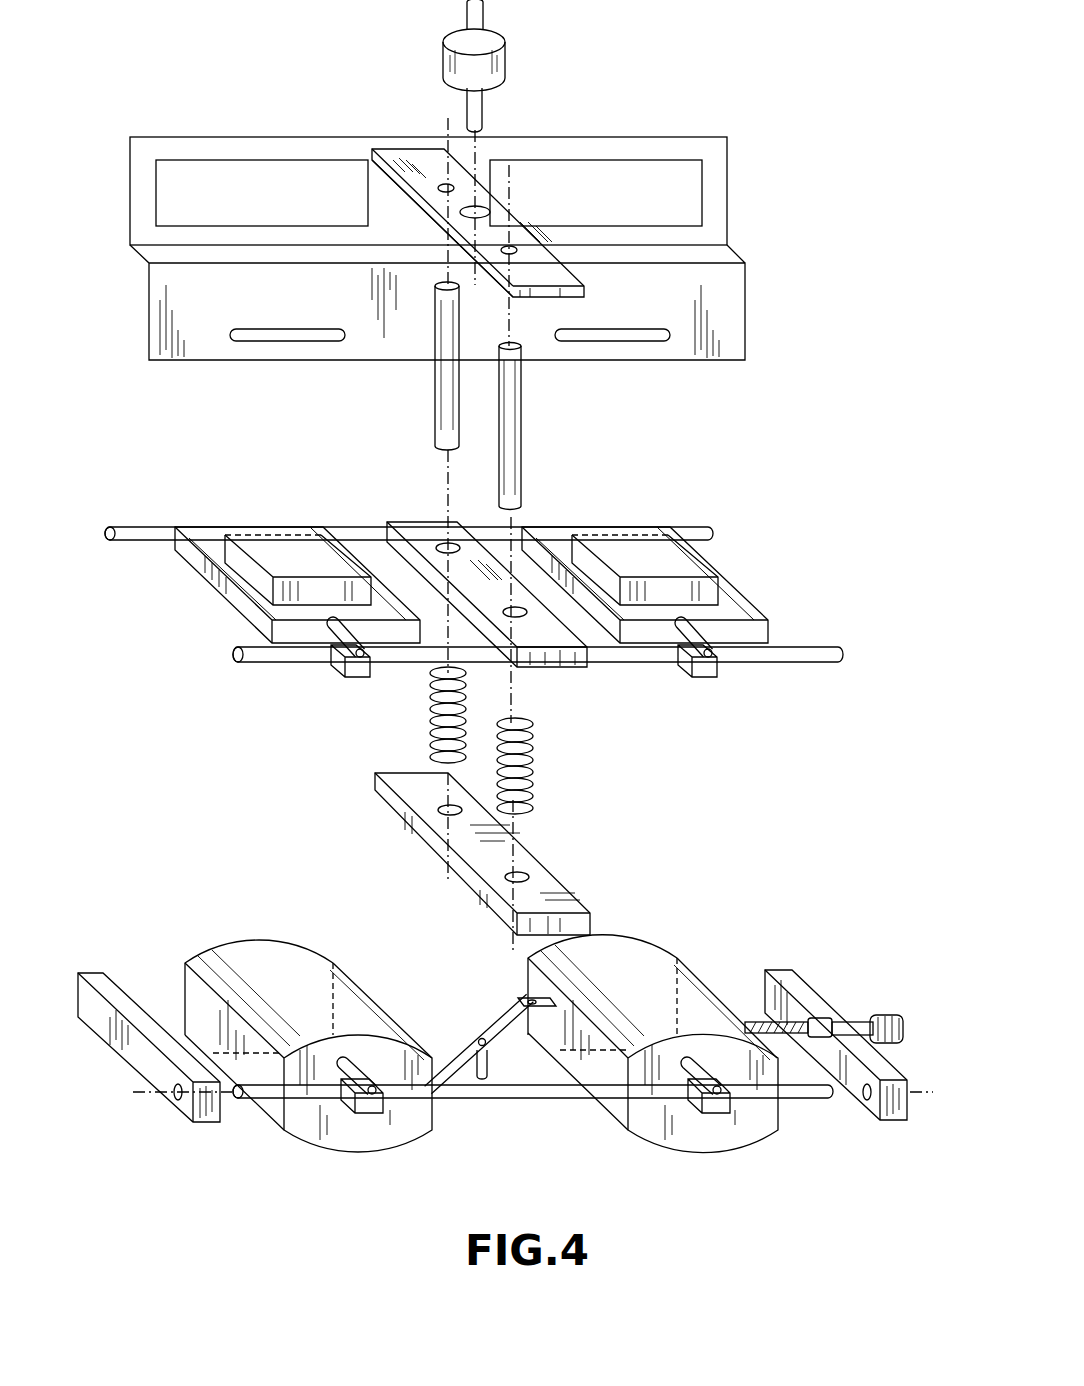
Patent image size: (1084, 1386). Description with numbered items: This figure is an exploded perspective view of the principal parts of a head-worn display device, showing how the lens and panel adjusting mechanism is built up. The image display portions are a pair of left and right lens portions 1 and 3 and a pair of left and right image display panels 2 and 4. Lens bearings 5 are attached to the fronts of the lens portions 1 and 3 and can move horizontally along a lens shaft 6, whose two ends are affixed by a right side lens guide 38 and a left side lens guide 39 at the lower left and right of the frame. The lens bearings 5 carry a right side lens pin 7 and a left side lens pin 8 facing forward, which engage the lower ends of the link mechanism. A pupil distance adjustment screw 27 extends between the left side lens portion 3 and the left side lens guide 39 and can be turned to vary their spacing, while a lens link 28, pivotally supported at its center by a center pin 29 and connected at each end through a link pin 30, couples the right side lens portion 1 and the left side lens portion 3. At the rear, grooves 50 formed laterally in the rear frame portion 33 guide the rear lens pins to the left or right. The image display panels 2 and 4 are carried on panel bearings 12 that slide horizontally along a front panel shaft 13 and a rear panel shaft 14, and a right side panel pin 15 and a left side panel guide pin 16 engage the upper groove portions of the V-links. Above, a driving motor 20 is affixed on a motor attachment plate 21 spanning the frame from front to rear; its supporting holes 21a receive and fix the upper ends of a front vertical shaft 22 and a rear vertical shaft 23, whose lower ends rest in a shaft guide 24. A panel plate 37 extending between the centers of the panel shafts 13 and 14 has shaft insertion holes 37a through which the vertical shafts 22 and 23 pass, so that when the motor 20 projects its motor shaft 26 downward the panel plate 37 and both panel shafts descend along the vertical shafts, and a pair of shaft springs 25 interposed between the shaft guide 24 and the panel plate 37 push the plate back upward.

The right side lens portion 1 is at (413, 1133).
The right side image display panel 2 is at (283, 560).
The left side lens portion 3 is at (658, 1128).
The left side image display panel 4 is at (633, 560).
The lens bearings 5 is at (363, 1108).
The lens shaft 6 is at (522, 1098).
The right side lens pin 7 is at (373, 1118).
The left side lens pin 8 is at (708, 1113).
The panel bearings 12 is at (337, 670).
The front panel shaft 13 is at (815, 648).
The rear panel shaft 14 is at (713, 533).
The right side panel pin 15 is at (355, 675).
The left side panel guide pin 16 is at (703, 667).
The driving motor 20 is at (505, 60).
The motor attachment plate 21 is at (399, 149).
The supporting holes 21a is at (439, 188).
The front vertical shaft 22 is at (517, 438).
The rear vertical shaft 23 is at (442, 400).
The shaft guide 24 is at (533, 858).
The shaft springs 25 is at (430, 718).
The motor shaft 26 is at (478, 112).
The pupil distance adjustment screw 27 is at (845, 1018).
The lens link 28 is at (490, 1027).
The center pin 29 is at (478, 1042).
The link pin 30 is at (523, 1000).
The rear frame portion 33 is at (730, 215).
The panel plate 37 is at (582, 660).
The shaft insertion holes 37a is at (443, 548).
The right side lens guide 38 is at (207, 1120).
The left side lens guide 39 is at (892, 1118).
The grooves 50 is at (258, 341).